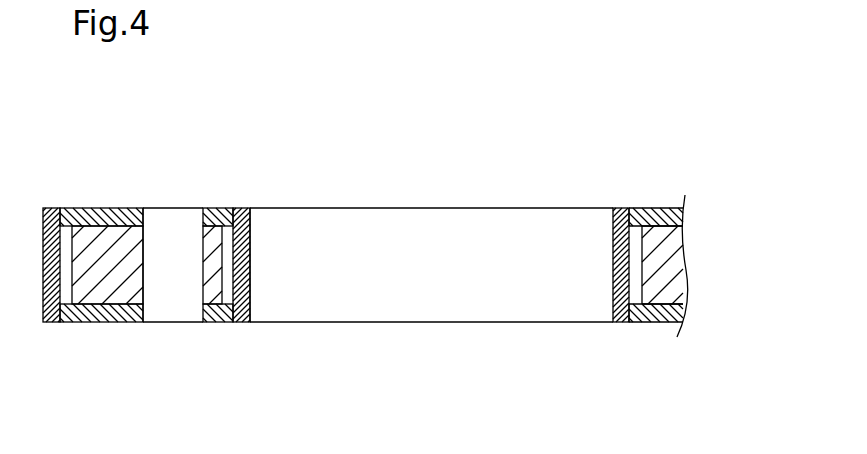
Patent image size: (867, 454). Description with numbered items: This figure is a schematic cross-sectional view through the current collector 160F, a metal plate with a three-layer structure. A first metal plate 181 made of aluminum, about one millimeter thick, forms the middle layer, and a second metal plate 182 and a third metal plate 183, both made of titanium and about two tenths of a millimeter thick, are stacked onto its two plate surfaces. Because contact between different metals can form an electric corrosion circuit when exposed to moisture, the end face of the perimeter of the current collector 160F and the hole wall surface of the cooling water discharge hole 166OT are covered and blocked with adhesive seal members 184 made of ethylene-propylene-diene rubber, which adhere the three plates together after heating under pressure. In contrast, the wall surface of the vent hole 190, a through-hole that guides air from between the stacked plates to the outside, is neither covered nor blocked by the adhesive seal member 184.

The current collector 160F is at (518, 130).
The first metal plate 181 is at (127, 279).
The second metal plate 182 is at (83, 323).
The third metal plate 183 is at (100, 207).
The adhesive seal member 184 is at (43, 237).
The vent hole 190 is at (143, 237).
The cooling water discharge hole 166OT is at (250, 237).